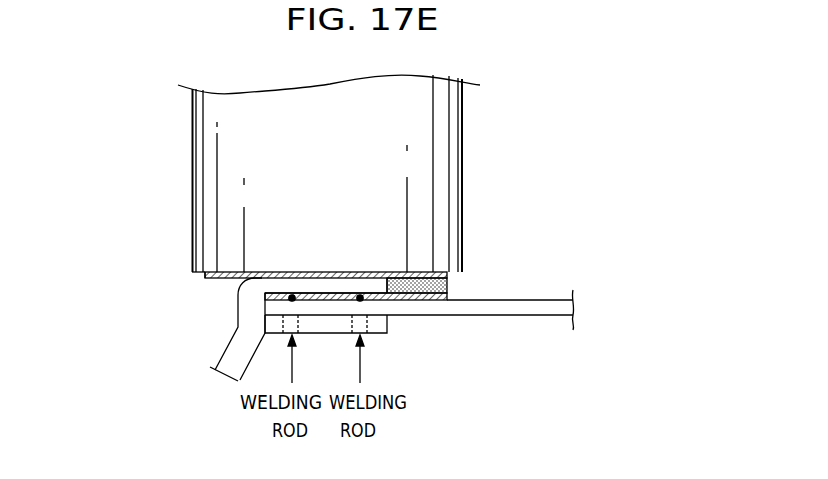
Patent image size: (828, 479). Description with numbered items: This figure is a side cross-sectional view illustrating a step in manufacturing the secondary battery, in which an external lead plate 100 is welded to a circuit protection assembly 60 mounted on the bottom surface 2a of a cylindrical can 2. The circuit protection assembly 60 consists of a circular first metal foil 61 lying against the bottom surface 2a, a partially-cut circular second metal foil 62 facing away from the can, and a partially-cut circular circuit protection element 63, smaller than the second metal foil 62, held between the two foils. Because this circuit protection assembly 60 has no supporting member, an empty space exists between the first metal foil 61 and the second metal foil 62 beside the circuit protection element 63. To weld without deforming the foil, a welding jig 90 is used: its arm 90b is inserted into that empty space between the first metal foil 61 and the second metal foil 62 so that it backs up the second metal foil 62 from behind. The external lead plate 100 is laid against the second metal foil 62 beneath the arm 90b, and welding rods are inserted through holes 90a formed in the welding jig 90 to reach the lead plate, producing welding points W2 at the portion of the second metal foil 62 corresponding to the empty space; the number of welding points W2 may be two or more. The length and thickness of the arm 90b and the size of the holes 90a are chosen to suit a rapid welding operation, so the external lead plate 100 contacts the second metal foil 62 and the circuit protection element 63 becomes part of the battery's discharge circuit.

The cylindrical can 2 is at (417, 134).
The bottom surface of cylindrical can 2a is at (223, 271).
The circuit protection assembly 60 is at (399, 255).
The first metal foil 61 is at (418, 272).
The second metal foil 62 is at (402, 279).
The circuit protection element 63 is at (446, 283).
The welding jig 90 is at (230, 353).
The holes of welding jig 90a is at (362, 327).
The arm of welding jig 90b is at (278, 283).
The welding points W2 is at (357, 295).
The external lead plate 100 is at (535, 305).